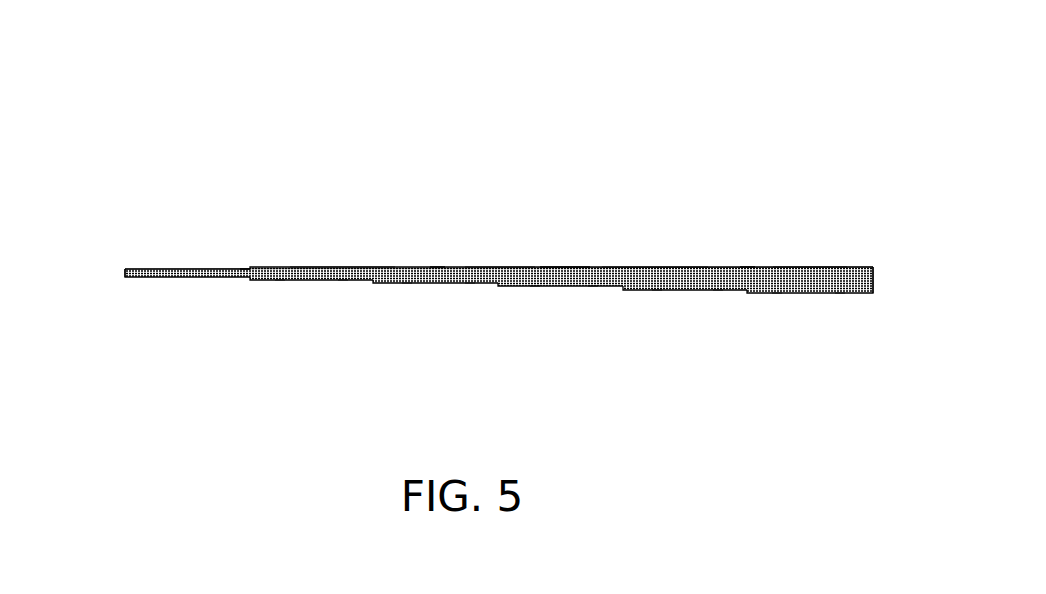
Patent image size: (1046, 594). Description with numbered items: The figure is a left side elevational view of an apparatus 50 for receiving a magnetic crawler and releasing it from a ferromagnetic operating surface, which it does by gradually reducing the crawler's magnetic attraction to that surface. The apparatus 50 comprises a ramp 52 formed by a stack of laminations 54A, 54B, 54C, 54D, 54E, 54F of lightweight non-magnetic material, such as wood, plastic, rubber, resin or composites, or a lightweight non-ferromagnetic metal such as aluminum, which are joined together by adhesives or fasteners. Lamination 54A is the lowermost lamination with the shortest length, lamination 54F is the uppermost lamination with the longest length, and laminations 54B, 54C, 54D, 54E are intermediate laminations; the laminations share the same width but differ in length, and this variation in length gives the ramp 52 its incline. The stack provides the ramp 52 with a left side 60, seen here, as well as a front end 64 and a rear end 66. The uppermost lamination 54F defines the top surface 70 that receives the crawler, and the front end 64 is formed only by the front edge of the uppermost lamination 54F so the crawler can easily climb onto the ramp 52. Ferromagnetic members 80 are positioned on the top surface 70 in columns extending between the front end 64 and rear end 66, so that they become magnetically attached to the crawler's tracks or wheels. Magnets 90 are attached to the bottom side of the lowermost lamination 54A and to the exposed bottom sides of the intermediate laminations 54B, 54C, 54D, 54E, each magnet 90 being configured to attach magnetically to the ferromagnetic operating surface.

The apparatus 50 is at (281, 152).
The ramp 52 is at (200, 269).
The lowermost lamination 54A is at (810, 293).
The intermediate lamination 54B is at (687, 290).
The intermediate lamination 54C is at (563, 286).
The intermediate lamination 54D is at (437, 283).
The intermediate lamination 54E is at (312, 280).
The uppermost lamination 54F is at (147, 269).
The left side 60 is at (563, 267).
The front end 64 is at (125, 270).
The rear end 66 is at (873, 279).
The top surface 70 is at (245, 269).
The ferromagnetic members 80 is at (390, 267).
The magnets 90 is at (280, 280).